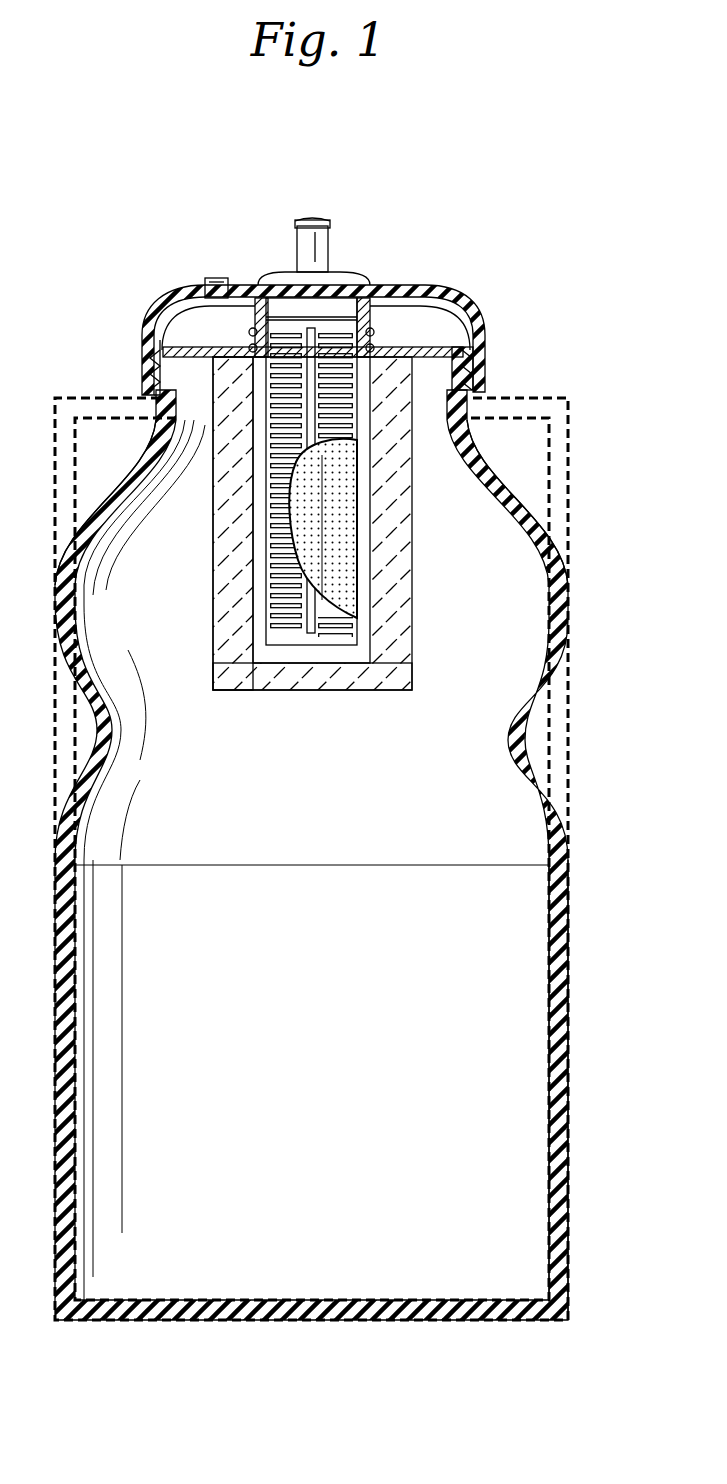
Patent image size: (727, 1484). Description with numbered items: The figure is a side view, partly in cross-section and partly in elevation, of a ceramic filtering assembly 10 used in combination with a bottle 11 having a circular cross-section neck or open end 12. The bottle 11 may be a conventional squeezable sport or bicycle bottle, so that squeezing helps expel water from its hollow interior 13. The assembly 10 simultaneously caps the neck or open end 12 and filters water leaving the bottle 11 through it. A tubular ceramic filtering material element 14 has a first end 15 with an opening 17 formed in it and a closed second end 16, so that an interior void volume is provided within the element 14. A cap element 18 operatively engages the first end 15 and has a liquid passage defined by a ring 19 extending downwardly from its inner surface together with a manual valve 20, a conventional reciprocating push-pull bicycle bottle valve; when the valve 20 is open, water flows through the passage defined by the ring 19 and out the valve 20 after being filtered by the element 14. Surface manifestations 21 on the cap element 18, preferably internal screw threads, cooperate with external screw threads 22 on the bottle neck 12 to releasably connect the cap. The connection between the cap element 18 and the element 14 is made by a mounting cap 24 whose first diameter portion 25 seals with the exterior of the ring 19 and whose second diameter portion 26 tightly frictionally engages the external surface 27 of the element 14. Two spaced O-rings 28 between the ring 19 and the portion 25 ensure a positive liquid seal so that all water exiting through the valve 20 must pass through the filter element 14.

The ceramic filtering assembly 10 is at (487, 316).
The bottle 11 is at (557, 547).
The neck or open end 12 is at (186, 368).
The hollow interior 13 is at (505, 1107).
The ceramic filtering material element 14 is at (243, 580).
The first end 15 is at (215, 347).
The second end 16 is at (308, 675).
The opening 17 is at (262, 392).
The cap element 18 is at (430, 292).
The ring 19 is at (365, 320).
The manual valve 20 is at (320, 210).
The surface manifestations 21 is at (483, 343).
The external screw threads 22 is at (450, 373).
The mounting cap 24 is at (227, 370).
The first diameter portion 25 is at (377, 344).
The second diameter portion 26 is at (180, 400).
The external surface 27 is at (412, 632).
The O-rings 28 is at (252, 343).